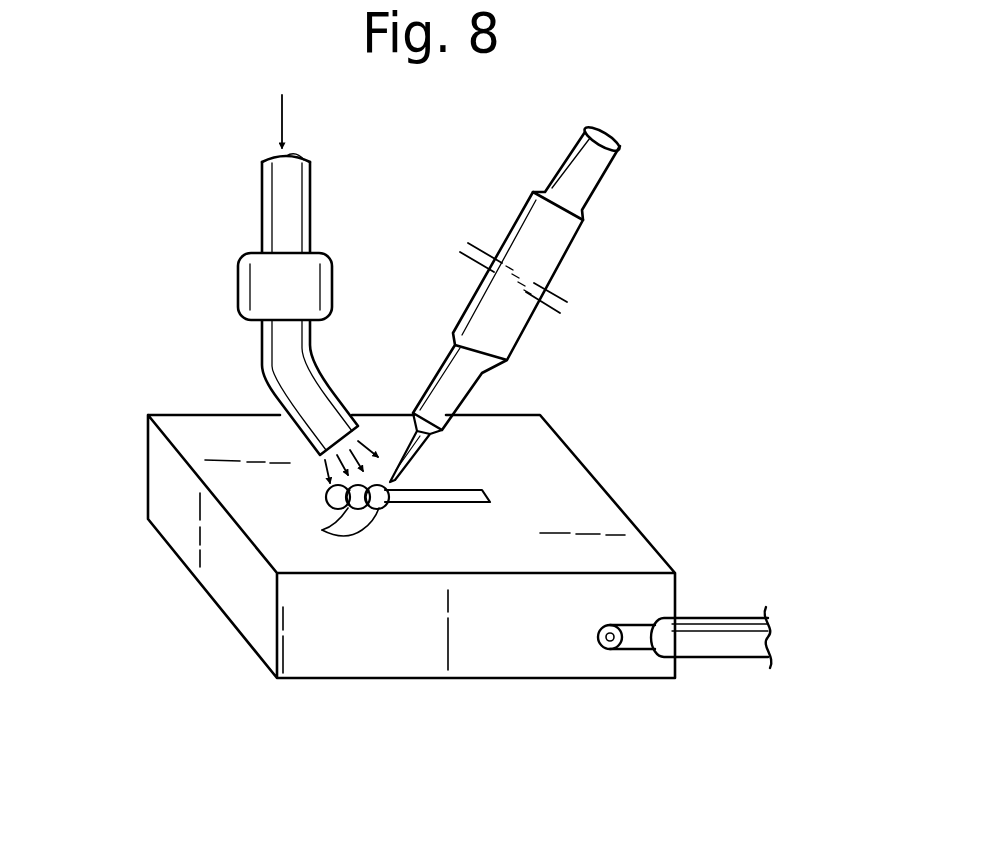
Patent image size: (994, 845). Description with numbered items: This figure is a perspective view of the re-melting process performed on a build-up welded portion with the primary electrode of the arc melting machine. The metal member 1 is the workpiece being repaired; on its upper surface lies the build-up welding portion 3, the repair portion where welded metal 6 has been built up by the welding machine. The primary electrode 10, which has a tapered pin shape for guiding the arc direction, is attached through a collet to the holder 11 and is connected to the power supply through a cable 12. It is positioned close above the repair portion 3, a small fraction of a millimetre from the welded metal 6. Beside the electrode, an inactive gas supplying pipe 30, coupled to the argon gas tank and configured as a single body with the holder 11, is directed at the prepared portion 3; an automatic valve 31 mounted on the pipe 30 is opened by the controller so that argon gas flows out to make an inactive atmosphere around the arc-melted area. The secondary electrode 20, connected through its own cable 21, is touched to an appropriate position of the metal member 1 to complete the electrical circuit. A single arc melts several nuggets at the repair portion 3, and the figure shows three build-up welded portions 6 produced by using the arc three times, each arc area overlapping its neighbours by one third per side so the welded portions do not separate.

The metal member 1 is at (590, 482).
The build-up welding portion 3 is at (450, 503).
The welded metal 6 is at (348, 527).
The primary electrode 10 is at (403, 448).
The holder 11 is at (558, 262).
The cable 12 is at (597, 170).
The secondary electrode 20 is at (637, 648).
The cable 21 is at (718, 648).
The inactive gas supplying pipe 30 is at (262, 362).
The automatic valve 31 is at (248, 289).